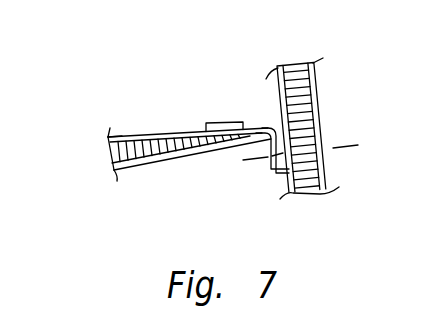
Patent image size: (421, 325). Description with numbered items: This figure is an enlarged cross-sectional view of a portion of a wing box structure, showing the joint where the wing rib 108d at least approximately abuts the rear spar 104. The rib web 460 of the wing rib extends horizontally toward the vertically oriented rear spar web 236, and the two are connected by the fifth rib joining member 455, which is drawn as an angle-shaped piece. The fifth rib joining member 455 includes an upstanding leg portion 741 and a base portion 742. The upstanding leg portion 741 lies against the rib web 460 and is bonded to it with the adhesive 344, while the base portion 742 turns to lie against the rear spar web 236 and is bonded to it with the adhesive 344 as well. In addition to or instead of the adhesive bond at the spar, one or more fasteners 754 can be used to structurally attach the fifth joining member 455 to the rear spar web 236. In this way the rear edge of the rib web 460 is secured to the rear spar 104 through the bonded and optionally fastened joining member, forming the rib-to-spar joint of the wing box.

The rear spar 104 is at (303, 185).
The wing rib 108d is at (110, 150).
The rear spar web 236 is at (318, 95).
The adhesive 344 is at (248, 126).
The fifth rib joining member 455 is at (230, 122).
The rib web 460 is at (122, 136).
The upstanding leg portion 741 is at (207, 126).
The base portion 742 is at (274, 168).
The fasteners 754 is at (325, 152).